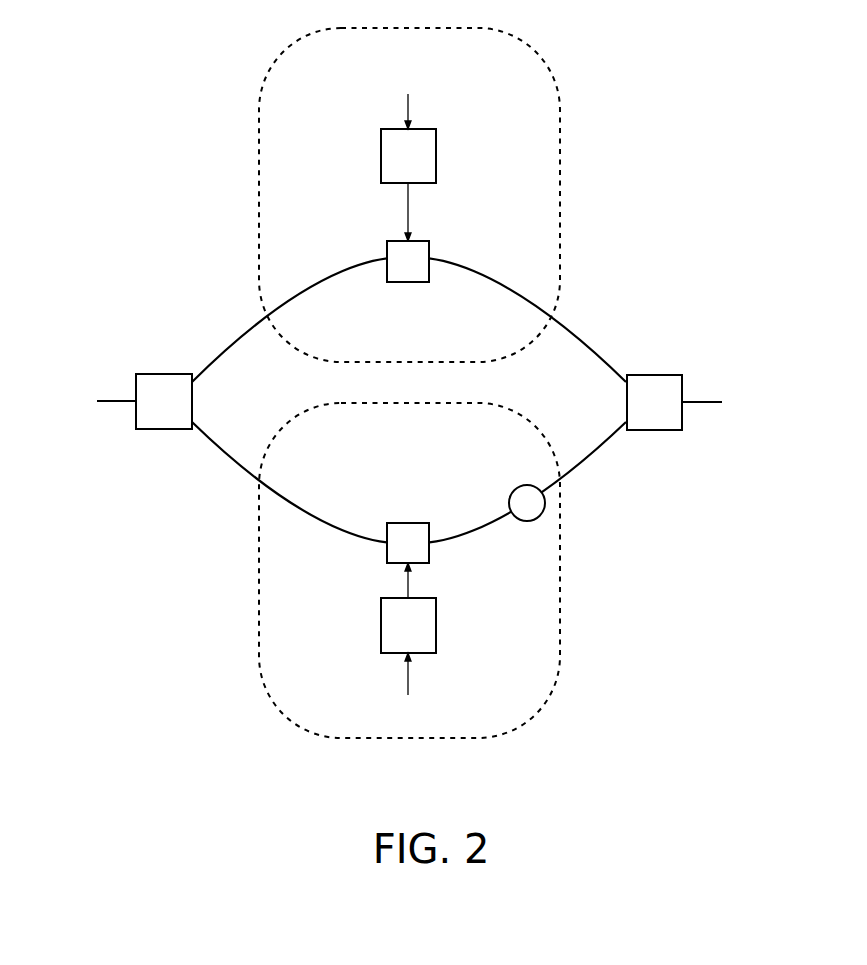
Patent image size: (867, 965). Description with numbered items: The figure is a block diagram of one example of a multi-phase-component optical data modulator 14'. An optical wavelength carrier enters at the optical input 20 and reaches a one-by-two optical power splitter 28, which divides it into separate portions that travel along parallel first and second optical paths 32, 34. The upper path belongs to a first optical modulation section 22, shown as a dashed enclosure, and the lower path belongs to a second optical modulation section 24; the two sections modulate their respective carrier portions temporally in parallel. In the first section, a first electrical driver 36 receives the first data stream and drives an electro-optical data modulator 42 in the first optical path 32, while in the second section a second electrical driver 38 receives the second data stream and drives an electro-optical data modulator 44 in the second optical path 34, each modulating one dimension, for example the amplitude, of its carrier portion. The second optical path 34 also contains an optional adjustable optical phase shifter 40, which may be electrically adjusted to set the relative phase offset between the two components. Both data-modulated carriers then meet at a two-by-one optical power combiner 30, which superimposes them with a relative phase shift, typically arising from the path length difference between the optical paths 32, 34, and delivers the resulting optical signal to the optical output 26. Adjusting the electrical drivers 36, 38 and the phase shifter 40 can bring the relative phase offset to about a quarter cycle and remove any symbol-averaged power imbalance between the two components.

The optical data modulator 14' is at (688, 257).
The optical input 20 is at (113, 402).
The first optical modulation section 22 is at (267, 73).
The second optical modulation section 24 is at (421, 739).
The optical output 26 is at (703, 403).
The 1×2 optical power splitter 28 is at (150, 414).
The 2×1 optical power combiner 30 is at (640, 414).
The first optical path 32 is at (229, 342).
The second optical path 34 is at (243, 469).
The first electrical driver 36 is at (422, 169).
The second electrical driver 38 is at (422, 639).
The adjustable optical phase shifter 40 is at (527, 522).
The electro-optical data modulator 42 is at (410, 270).
The electro-optical data modulator 44 is at (408, 534).